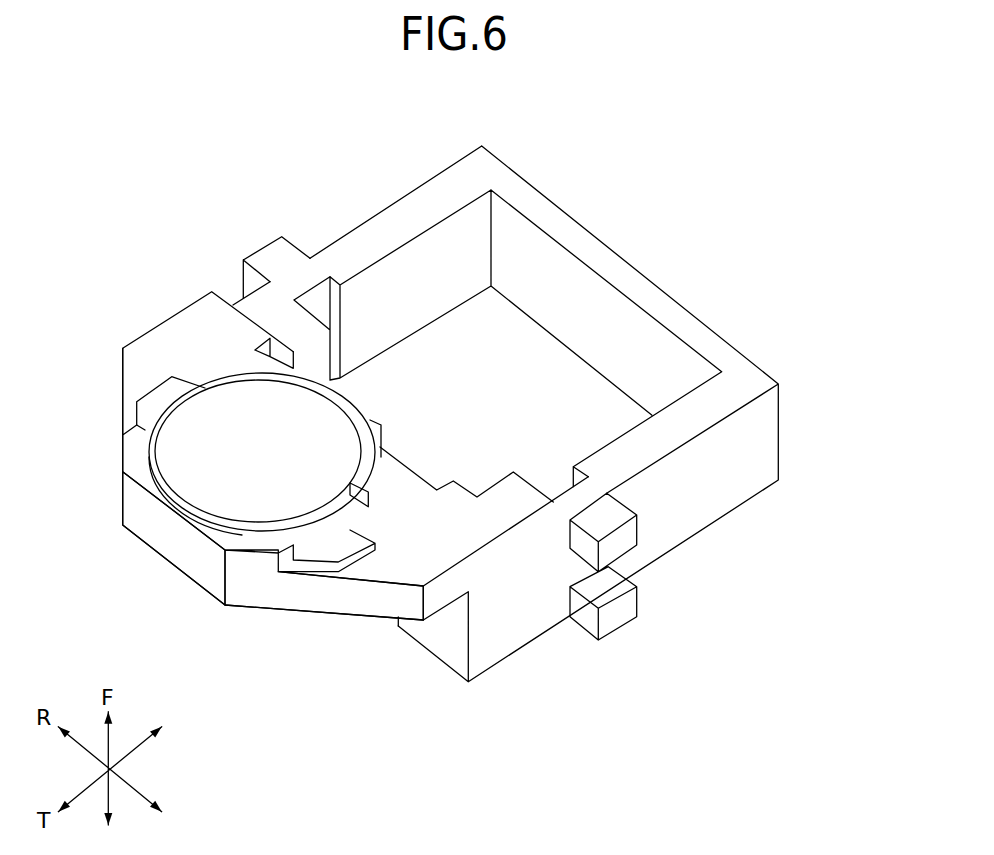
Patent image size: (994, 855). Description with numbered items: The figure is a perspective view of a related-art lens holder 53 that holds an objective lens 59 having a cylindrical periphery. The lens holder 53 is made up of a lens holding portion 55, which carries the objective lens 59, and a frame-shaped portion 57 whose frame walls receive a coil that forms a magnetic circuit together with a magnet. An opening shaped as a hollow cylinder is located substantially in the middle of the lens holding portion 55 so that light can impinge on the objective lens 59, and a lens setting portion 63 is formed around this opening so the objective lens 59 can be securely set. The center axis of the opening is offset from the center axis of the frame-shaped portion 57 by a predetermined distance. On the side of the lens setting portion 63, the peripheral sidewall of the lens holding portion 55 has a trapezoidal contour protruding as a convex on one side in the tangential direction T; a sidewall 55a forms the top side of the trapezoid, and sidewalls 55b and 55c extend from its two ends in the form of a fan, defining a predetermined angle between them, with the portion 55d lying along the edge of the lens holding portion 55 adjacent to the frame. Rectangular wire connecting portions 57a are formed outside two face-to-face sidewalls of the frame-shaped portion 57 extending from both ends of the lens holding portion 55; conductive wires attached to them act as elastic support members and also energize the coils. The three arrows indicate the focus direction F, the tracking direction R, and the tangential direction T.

The lens holder 53 is at (700, 229).
The lens holding portion 55 is at (173, 330).
The sidewall 55a is at (182, 555).
The sidewall 55b is at (313, 602).
The sidewall 55c is at (120, 412).
The holder engaging edge portion 55d is at (405, 463).
The frame-shaped portion 57 is at (743, 492).
The wire connecting portion 57a is at (273, 252).
The objective lens 59 is at (270, 464).
The lens setting portion 63 is at (163, 393).